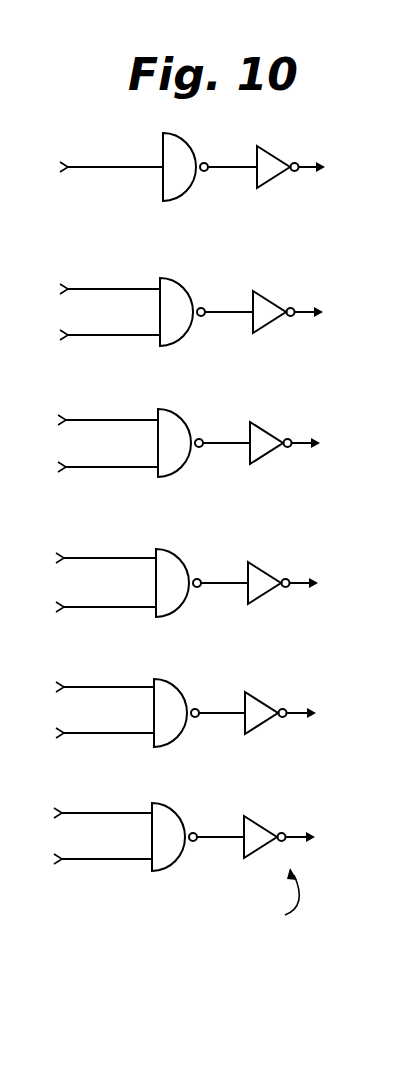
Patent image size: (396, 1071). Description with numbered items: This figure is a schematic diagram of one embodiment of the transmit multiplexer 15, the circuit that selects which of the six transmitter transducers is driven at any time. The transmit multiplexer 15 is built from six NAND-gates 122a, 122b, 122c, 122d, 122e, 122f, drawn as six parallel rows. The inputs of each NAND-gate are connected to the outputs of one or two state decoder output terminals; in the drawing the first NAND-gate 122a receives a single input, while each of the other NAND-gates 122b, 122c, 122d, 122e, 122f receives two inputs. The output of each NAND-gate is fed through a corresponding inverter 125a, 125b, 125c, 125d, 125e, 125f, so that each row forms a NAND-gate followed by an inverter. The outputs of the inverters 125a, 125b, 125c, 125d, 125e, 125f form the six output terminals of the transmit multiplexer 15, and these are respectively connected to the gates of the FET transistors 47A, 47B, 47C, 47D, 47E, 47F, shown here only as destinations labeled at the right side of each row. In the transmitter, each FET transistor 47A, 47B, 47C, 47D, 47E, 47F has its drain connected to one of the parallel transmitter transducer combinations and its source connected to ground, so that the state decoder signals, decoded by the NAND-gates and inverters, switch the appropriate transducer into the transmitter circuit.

The transmit multiplexer 15 is at (81, 128).
The NAND-gate 122a is at (218, 128).
The NAND-gate 122b is at (206, 270).
The NAND-gate 122c is at (204, 399).
The NAND-gate 122d is at (202, 536).
The NAND-gate 122e is at (202, 663).
The NAND-gate 122f is at (194, 792).
The inverter 125a is at (313, 138).
The inverter 125b is at (307, 285).
The inverter 125c is at (305, 413).
The inverter 125d is at (305, 553).
The inverter 125e is at (300, 681).
The inverter 125f is at (300, 811).
The FET transistor 47A is at (335, 162).
The FET transistor 47B is at (332, 306).
The FET transistor 47C is at (330, 437).
The FET transistor 47D is at (328, 576).
The FET transistor 47E is at (325, 706).
The FET transistor 47F is at (324, 830).